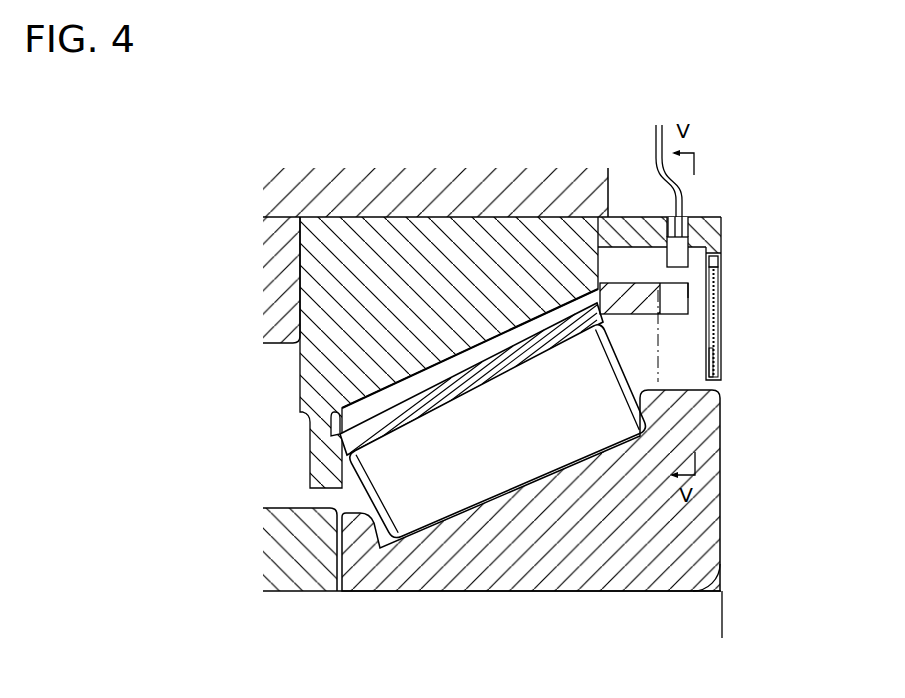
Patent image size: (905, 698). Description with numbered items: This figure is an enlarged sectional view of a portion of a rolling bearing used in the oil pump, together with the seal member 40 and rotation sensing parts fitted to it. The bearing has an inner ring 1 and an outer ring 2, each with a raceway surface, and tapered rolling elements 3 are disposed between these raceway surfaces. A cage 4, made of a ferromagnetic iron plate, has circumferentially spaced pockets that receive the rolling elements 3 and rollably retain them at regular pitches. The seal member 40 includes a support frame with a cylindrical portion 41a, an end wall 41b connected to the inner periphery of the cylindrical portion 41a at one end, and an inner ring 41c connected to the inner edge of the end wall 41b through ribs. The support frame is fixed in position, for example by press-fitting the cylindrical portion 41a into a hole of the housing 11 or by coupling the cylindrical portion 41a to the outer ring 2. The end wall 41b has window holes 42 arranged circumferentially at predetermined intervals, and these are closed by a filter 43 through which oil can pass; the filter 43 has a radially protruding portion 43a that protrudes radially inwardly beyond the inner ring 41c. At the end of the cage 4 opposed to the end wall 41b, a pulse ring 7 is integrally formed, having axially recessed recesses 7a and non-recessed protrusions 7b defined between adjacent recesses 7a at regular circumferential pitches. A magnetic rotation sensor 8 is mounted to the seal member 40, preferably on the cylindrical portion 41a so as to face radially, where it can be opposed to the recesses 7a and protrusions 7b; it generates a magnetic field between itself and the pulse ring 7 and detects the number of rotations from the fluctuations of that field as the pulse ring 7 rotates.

The inner ring 1 is at (560, 540).
The outer ring 2 is at (372, 255).
The rolling elements 3 is at (462, 490).
The cage 4 is at (488, 347).
The pulse ring 7 is at (696, 290).
The recesses 7a is at (657, 306).
The protrusions 7b is at (721, 293).
The magnetic rotation sensor 8 is at (685, 248).
The housing 11 is at (540, 193).
The seal member 40 is at (727, 266).
The cylindrical portion 41a is at (640, 214).
The end wall 41b is at (721, 256).
The inner ring 41c is at (721, 358).
The window holes 42 is at (721, 278).
The filter 43 is at (721, 335).
The radially protruding portion 43a is at (721, 377).